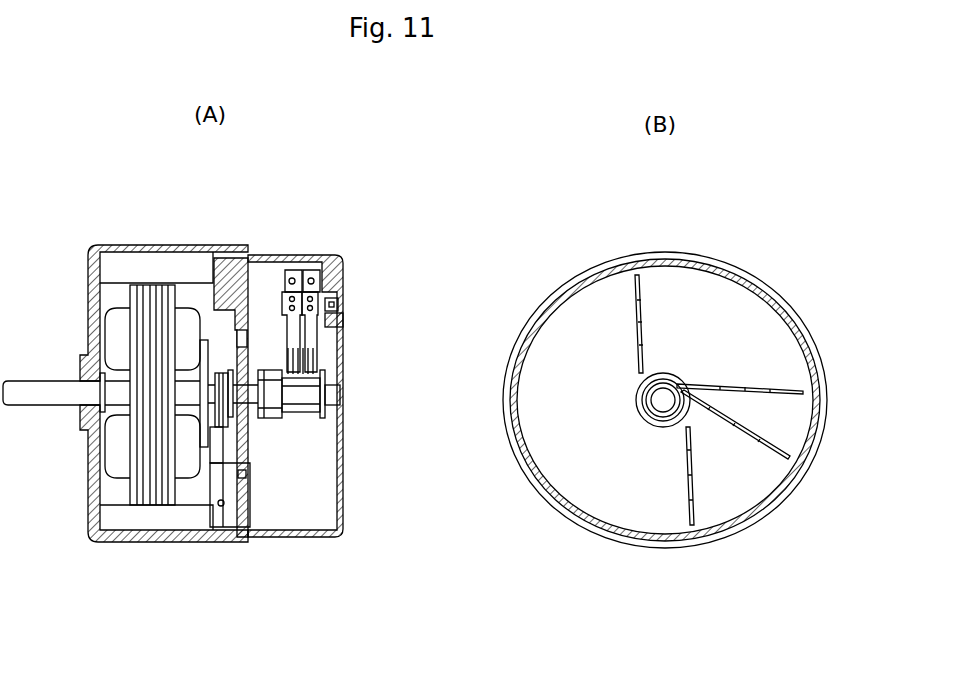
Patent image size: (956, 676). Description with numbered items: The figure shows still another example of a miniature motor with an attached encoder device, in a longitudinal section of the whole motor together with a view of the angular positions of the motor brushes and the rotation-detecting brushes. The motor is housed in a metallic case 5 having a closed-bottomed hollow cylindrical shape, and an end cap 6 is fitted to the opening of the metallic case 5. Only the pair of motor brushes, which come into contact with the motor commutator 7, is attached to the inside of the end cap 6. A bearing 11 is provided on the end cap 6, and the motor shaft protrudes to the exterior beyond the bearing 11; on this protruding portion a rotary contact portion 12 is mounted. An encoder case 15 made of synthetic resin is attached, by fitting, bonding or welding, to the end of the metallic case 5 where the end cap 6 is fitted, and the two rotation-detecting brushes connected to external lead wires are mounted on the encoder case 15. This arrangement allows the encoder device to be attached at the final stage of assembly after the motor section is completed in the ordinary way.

The metallic case 5 is at (170, 542).
The end cap 6 is at (258, 278).
The motor commutator 7 is at (215, 380).
The bearing 11 is at (250, 423).
The rotary contact portion 12 is at (303, 397).
The encoder case 15 is at (287, 253).